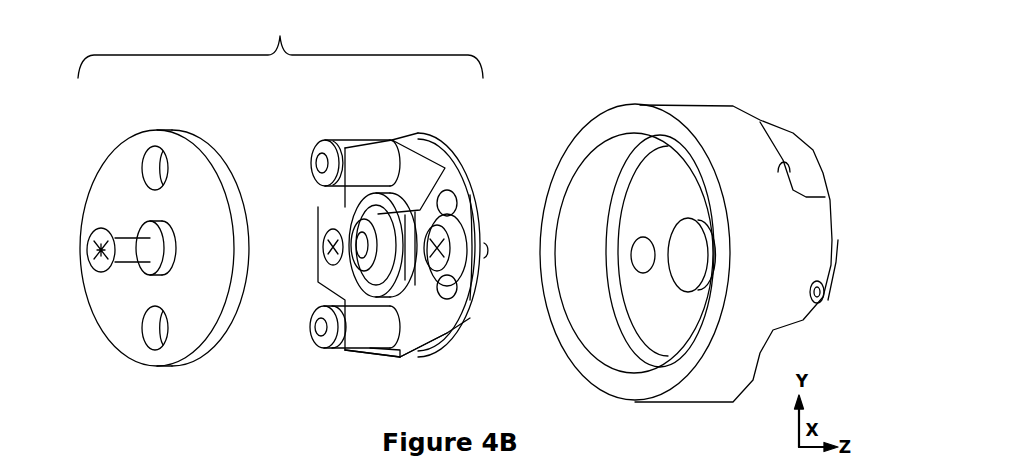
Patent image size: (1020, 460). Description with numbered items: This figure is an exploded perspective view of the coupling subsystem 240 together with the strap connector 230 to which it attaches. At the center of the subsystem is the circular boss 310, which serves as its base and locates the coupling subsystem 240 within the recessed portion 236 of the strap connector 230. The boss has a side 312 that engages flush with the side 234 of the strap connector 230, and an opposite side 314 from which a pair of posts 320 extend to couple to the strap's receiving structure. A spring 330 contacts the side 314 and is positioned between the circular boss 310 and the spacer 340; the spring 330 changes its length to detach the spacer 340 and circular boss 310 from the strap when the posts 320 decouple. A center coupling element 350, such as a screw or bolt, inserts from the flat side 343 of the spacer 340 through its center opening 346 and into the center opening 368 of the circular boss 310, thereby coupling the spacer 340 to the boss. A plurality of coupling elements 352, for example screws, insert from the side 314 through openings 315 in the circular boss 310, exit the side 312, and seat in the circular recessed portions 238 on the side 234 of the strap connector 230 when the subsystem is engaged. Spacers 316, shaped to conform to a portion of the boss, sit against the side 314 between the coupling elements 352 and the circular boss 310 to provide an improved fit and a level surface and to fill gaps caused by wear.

The coupling subsystem 240 is at (280, 44).
The spacer 340 is at (196, 138).
The side of the spacer 343 is at (112, 353).
The center coupling element 350 is at (100, 235).
The center opening of the spacer 346 is at (168, 228).
The circular boss 310 is at (447, 172).
The posts 320 is at (350, 149).
The spring 330 is at (356, 215).
The center opening of the circular boss 368 is at (352, 240).
The coupling elements 352 is at (325, 247).
The openings in the circular boss 315 is at (450, 205).
The spacers 316 is at (470, 216).
The side of the circular boss 312 is at (459, 330).
The opposite side of the circular boss 314 is at (380, 349).
The strap connector 230 is at (725, 122).
The side of the strap connector 234 is at (580, 366).
The recessed portion 236 is at (606, 151).
The circular recessed portions 238 is at (648, 231).